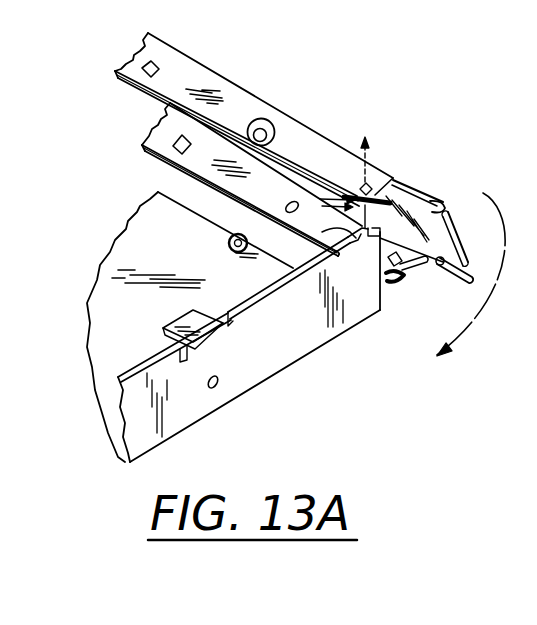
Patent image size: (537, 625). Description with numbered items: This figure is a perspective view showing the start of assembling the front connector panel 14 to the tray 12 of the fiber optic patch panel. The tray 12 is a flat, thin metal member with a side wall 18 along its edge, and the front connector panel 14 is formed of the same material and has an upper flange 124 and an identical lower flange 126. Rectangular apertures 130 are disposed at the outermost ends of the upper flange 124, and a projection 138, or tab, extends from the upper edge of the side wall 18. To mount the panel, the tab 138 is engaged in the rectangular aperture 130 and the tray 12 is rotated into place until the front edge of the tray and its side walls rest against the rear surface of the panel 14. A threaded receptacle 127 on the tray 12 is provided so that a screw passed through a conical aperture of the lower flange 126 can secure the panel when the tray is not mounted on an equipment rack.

The tray 12 is at (142, 236).
The front connector panel 14 is at (256, 93).
The side wall 18 is at (265, 370).
The upper flange 124 is at (295, 130).
The lower flange 126 is at (395, 279).
The threaded receptacle 127 is at (228, 246).
The rectangular aperture 130 is at (375, 180).
The projection 138 is at (318, 236).